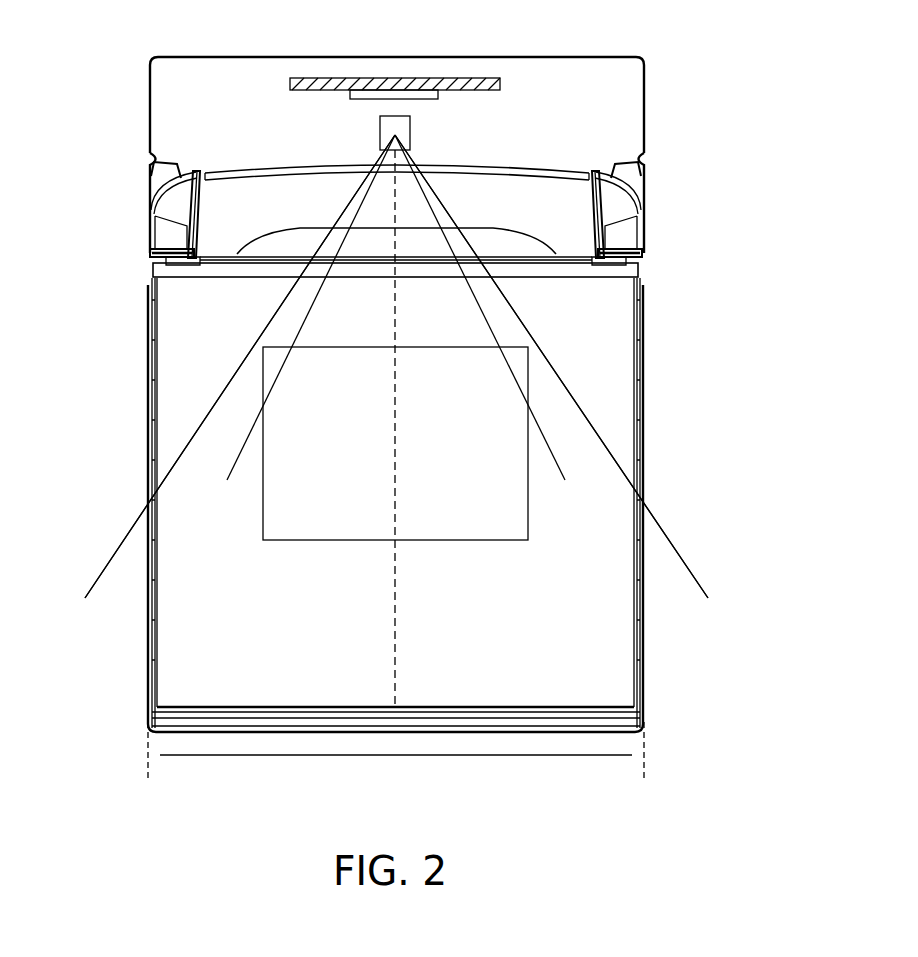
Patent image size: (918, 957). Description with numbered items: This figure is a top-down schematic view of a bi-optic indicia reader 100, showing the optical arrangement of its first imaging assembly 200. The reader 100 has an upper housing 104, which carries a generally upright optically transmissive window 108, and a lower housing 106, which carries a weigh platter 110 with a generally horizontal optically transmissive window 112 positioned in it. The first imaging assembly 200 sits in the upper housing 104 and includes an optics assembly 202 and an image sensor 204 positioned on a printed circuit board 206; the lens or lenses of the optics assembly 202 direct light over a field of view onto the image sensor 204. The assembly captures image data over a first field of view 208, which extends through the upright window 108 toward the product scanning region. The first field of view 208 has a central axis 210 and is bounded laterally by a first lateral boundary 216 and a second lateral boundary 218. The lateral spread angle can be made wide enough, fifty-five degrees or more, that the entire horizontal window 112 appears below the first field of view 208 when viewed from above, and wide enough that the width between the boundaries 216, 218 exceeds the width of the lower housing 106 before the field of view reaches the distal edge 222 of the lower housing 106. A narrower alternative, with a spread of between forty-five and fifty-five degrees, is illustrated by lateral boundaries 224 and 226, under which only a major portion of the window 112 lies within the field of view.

The bi-optic indicia reader 100 is at (415, 393).
The upper housing 104 is at (563, 57).
The lower housing 106 is at (644, 655).
The optically transmissive window 108 is at (166, 300).
The weigh platter 110 is at (580, 658).
The optically transmissive window 112 is at (480, 452).
The first imaging assembly 200 is at (383, 80).
The optics assembly 202 is at (411, 133).
The image sensor 204 is at (438, 97).
The printed circuit board 206 is at (395, 78).
The first field of view 208 is at (240, 362).
The FFOV central axis 210 is at (394, 334).
The first FFOV lateral boundary 216 is at (266, 325).
The second FFOV lateral boundary 218 is at (526, 327).
The distal edge 222 is at (134, 713).
The lateral boundary 224 is at (228, 466).
The lateral boundary 226 is at (564, 466).